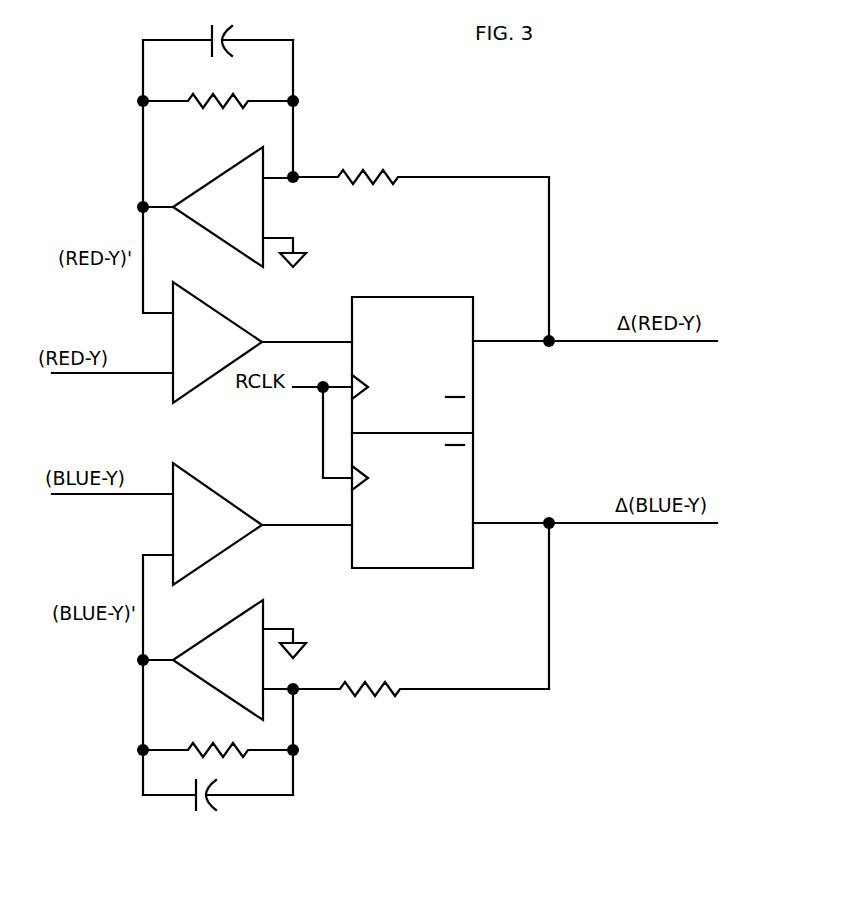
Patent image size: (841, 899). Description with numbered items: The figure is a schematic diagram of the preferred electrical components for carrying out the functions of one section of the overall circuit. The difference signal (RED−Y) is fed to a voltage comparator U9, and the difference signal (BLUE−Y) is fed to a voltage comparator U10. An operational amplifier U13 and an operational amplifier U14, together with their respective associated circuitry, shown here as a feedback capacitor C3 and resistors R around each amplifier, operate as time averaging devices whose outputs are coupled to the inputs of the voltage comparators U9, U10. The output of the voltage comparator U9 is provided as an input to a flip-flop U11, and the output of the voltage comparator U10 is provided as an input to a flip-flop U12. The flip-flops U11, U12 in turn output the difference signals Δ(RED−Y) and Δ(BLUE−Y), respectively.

The voltage comparator U9 is at (217, 342).
The voltage comparator U10 is at (217, 524).
The flip-flop U11 is at (412, 365).
The flip-flop U12 is at (412, 500).
The operational amplifier U13 is at (239, 207).
The operational amplifier U14 is at (239, 660).
The feedback capacitor C3 is at (218, 421).
The resistor R is at (346, 425).